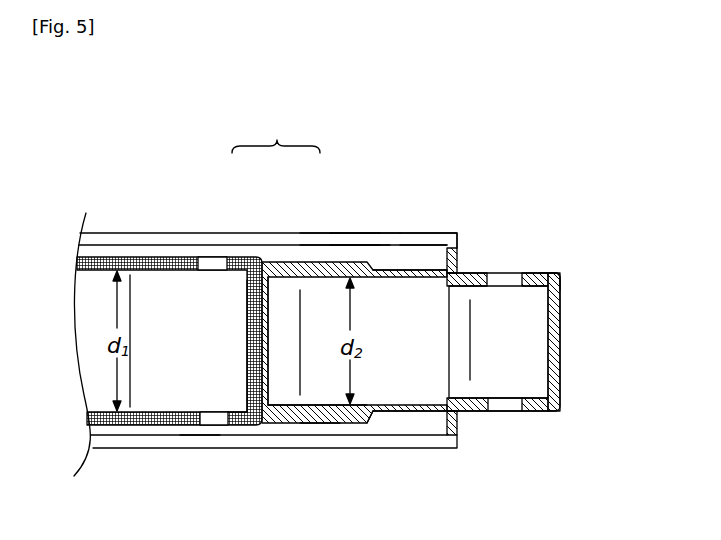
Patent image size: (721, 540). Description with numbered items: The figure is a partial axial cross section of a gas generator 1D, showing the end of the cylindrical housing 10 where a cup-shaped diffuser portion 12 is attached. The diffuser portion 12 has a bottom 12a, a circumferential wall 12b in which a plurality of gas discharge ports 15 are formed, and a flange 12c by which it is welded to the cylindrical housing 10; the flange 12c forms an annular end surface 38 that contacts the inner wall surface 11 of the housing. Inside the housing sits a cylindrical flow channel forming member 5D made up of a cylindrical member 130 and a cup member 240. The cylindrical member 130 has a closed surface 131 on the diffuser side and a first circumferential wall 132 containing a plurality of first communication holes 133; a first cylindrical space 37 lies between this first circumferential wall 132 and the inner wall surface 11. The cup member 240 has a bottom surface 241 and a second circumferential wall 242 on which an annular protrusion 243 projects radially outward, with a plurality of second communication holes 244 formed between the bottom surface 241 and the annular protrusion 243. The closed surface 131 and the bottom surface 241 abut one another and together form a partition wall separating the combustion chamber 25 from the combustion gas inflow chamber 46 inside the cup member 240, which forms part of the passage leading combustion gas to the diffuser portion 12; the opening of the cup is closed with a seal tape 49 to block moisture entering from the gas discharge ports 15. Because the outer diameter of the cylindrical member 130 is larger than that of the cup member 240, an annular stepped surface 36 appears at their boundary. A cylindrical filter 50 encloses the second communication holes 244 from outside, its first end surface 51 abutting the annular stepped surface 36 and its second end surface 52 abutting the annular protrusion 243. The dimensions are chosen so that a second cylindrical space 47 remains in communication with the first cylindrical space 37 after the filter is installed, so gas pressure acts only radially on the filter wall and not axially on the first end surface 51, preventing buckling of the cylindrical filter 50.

The gas generator 1D is at (410, 187).
The cylindrical flow channel forming member 5D is at (276, 131).
The cylindrical housing 10 is at (337, 233).
The inner wall surface 11 is at (189, 244).
The diffuser portion 12 is at (547, 335).
The bottom 12a is at (563, 360).
The circumferential wall 12b is at (549, 273).
The flange 12c is at (458, 262).
The gas discharge ports 15 is at (514, 411).
The combustion chamber 25 is at (213, 337).
The annular stepped surface 36 is at (275, 427).
The first cylindrical space 37 is at (198, 428).
The annular end surface 38 is at (434, 255).
The combustion gas inflow chamber 46 is at (419, 381).
The second cylindrical space 47 is at (319, 428).
The seal tape 49 is at (451, 338).
The cylindrical filter 50 is at (359, 244).
The first end surface 51 is at (250, 279).
The second end surface 52 is at (372, 277).
The cylindrical member 130 is at (190, 343).
The closed surface 131 is at (247, 354).
The first circumferential wall 132 is at (232, 427).
The first communication holes 133 is at (214, 413).
The cup member 240 is at (359, 337).
The bottom surface 241 is at (270, 338).
The second circumferential wall 242 is at (405, 413).
The annular protrusion 243 is at (370, 424).
The second communication holes 244 is at (333, 405).